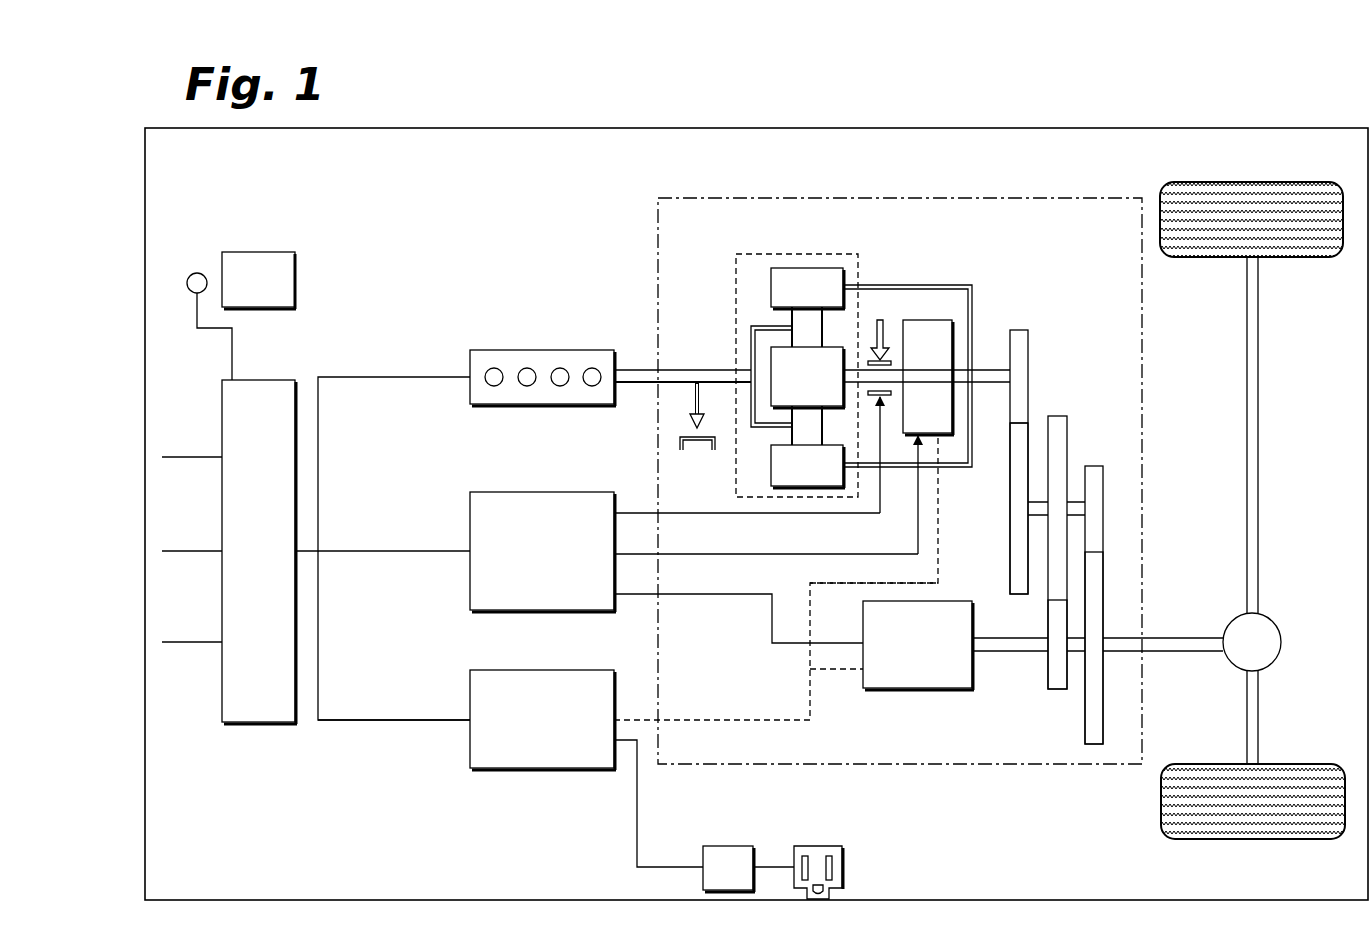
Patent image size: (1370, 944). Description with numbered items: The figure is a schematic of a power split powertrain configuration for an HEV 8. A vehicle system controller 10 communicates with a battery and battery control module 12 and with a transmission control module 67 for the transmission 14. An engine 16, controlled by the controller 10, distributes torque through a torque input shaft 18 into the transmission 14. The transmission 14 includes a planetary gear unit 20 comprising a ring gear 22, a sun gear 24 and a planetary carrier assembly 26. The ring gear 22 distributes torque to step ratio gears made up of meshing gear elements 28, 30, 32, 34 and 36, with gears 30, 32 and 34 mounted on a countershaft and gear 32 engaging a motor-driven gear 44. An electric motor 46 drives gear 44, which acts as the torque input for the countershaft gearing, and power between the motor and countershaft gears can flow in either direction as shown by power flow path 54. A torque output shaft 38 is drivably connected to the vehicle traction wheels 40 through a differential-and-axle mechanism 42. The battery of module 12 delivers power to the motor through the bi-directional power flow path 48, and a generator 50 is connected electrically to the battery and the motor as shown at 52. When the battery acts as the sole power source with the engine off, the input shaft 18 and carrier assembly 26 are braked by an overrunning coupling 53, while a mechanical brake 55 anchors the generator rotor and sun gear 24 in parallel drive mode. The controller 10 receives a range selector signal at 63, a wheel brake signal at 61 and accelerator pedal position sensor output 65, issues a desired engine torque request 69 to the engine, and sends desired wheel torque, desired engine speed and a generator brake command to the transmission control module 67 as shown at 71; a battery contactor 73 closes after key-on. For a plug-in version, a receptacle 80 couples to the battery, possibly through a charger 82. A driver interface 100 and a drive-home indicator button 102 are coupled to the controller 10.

The hybrid electric vehicle (HEV) 8 is at (1122, 90).
The vehicle system controller 10 is at (265, 380).
The battery and battery control module 12 is at (558, 770).
The transmission 14 is at (752, 766).
The engine 16 is at (594, 350).
The torque input shaft 18 is at (646, 384).
The planetary gear unit 20 is at (866, 264).
The ring gear 22 is at (771, 288).
The sun gear 24 is at (771, 360).
The planetary carrier assembly 26 is at (751, 333).
The meshing gear element 28 is at (1030, 352).
The meshing gear element 30 is at (1008, 542).
The meshing gear element 32 is at (1068, 440).
The meshing gear element 34 is at (1104, 480).
The meshing gear element 36 is at (1104, 590).
The torque output shaft 38 is at (1198, 655).
The vehicle traction wheels 40 is at (1285, 182).
The differential-and-axle mechanism 42 is at (1282, 641).
The motor-driven gear 44 is at (1057, 690).
The electric motor 46 is at (920, 689).
The power flow path 48 is at (796, 715).
The generator 50 is at (955, 330).
The power flow path 52 is at (822, 583).
The overrunning coupling 53 is at (694, 402).
The power flow path 54 is at (832, 672).
The mechanical brake 55 is at (890, 335).
The wheel brake signal 61 is at (205, 650).
The transmission range selector signal 63 is at (205, 465).
The accelerator pedal position sensor output 65 is at (205, 558).
The transmission control module 67 is at (497, 492).
The desired engine torque request 69 is at (388, 378).
The desired wheel torque, desired engine speed and generator brake command 71 is at (388, 552).
The battery contactor 73 is at (388, 721).
The receptacle 80 is at (818, 846).
The charger 82 is at (704, 816).
The driver interface 100 is at (259, 280).
The drive-home indicator button 102 is at (186, 283).